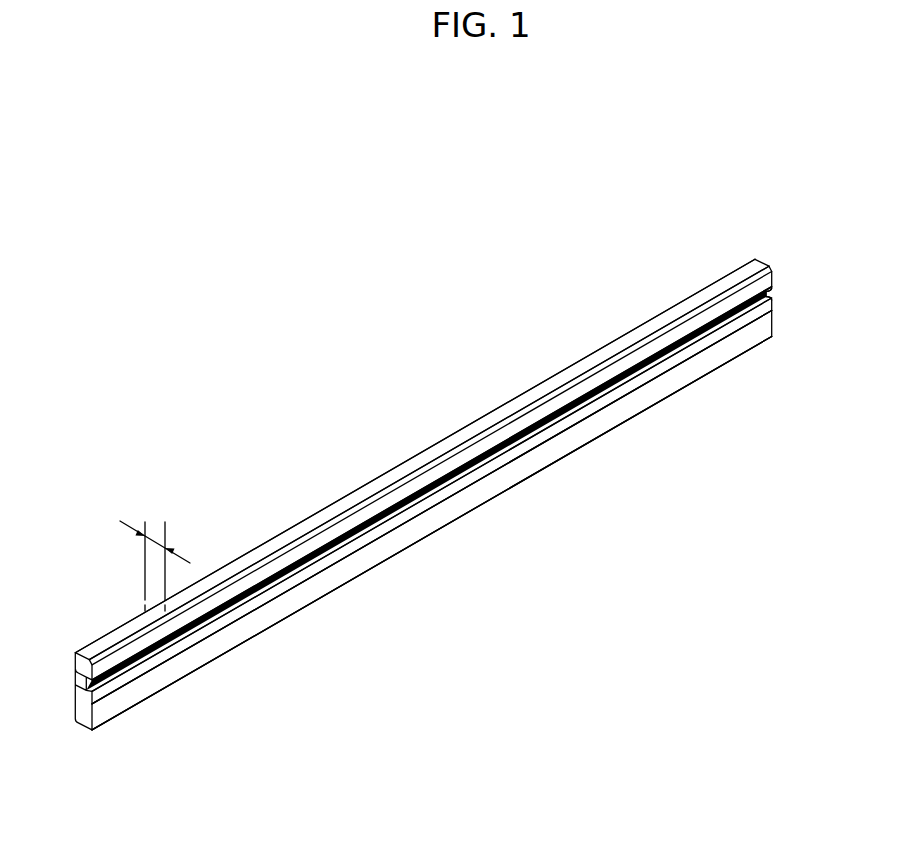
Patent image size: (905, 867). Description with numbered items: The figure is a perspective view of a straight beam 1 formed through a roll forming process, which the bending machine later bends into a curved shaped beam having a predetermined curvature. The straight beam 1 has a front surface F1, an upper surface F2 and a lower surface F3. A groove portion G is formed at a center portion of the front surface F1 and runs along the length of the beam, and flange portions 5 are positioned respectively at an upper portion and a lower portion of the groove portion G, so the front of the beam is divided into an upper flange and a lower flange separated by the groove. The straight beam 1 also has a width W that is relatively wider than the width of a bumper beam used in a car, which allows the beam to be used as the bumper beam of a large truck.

The straight beam 1 is at (394, 434).
The flange portions 5 is at (768, 313).
The front surface F1 is at (428, 487).
The upper surface F2 is at (266, 545).
The lower surface F3 is at (230, 665).
The groove portion G is at (273, 596).
The width W is at (155, 557).